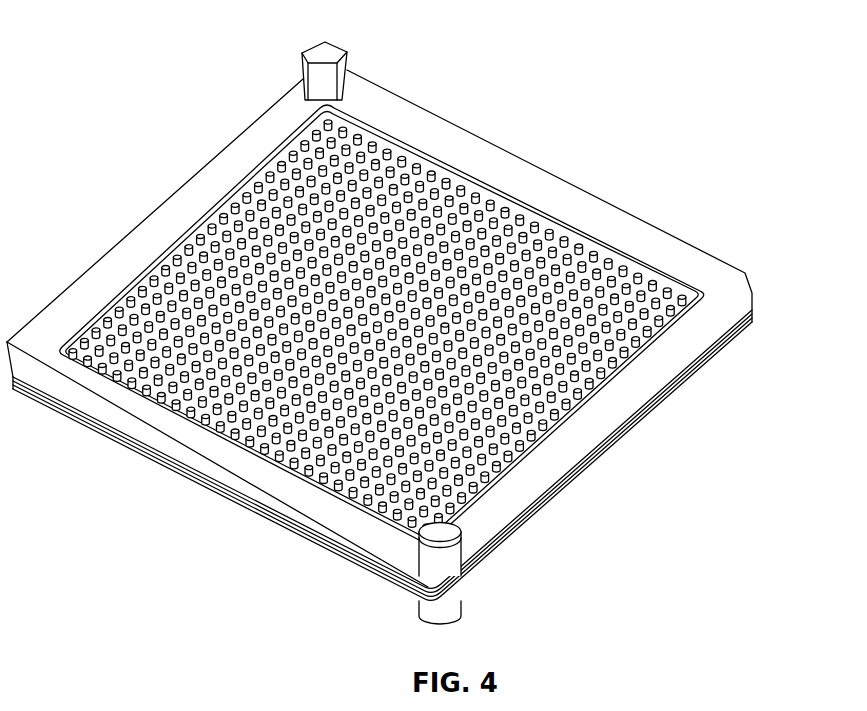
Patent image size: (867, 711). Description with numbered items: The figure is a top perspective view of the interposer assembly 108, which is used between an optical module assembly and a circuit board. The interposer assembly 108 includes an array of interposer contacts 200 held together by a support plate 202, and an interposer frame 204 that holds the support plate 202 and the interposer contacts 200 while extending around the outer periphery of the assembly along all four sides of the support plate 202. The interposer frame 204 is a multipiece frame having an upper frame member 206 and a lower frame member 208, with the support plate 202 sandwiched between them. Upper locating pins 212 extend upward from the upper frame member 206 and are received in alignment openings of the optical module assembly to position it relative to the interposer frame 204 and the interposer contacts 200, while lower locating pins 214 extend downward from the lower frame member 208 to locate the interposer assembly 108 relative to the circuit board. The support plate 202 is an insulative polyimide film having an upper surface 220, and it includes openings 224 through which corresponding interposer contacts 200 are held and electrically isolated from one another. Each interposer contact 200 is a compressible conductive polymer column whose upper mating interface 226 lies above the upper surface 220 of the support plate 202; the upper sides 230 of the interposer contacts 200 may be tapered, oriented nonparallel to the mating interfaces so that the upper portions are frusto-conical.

The interposer assembly 108 is at (556, 110).
The interposer contacts 200 is at (566, 241).
The support plate 202 is at (616, 263).
The interposer frame 204 is at (721, 283).
The upper frame member 206 is at (260, 482).
The lower frame member 208 is at (283, 528).
The upper locating pins 212 is at (323, 54).
The lower locating pins 214 is at (450, 608).
The upper surface 220 is at (163, 414).
The openings 224 is at (118, 435).
The upper mating interface 226 is at (190, 427).
The upper sides 230 is at (242, 490).